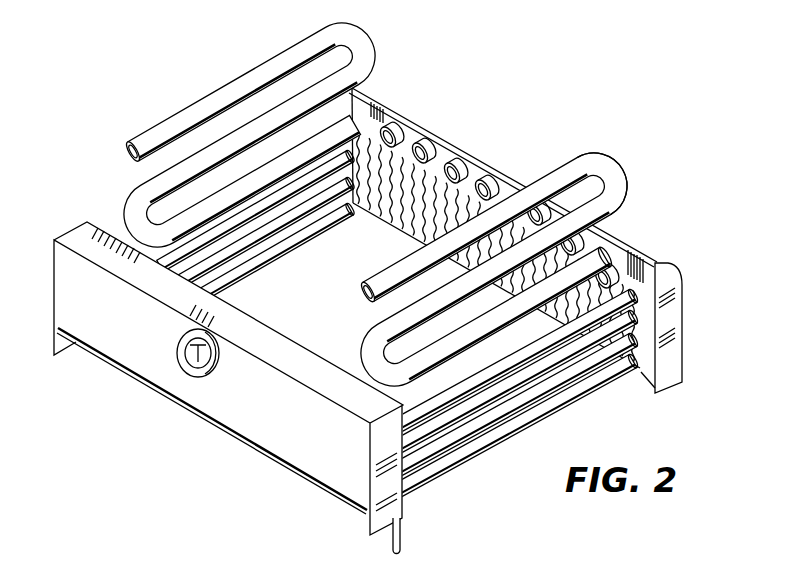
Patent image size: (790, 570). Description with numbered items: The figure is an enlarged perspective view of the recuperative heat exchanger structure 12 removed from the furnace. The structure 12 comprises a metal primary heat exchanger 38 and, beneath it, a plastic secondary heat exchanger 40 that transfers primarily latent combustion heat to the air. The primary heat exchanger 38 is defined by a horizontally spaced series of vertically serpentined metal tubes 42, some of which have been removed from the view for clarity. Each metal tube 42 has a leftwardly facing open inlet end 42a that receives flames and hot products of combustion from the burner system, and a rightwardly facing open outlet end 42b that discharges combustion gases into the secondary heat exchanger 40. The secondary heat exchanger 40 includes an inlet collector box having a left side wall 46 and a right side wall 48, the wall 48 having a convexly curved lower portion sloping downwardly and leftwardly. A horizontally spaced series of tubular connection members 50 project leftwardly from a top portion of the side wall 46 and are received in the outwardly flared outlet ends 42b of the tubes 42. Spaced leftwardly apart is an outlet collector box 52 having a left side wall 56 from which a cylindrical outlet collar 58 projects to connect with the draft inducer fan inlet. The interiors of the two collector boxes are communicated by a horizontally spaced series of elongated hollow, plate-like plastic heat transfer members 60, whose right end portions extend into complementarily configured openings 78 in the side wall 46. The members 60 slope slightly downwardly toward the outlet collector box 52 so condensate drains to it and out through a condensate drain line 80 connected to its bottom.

The recuperative heat exchanger structure 12 is at (541, 98).
The primary heat exchanger 38 is at (626, 165).
The secondary heat exchanger 40 is at (714, 308).
The metal tubes 42 is at (402, 204).
The open inlet end 42a is at (170, 116).
The open outlet end 42b is at (360, 87).
The left side wall 46 is at (655, 365).
The right side wall 48 is at (678, 324).
The tubular connection members 50 is at (460, 145).
The outlet collector box 52 is at (260, 362).
The left side wall 56 is at (143, 352).
The cylindrical outlet collar 58 is at (213, 370).
The heat transfer members 60 is at (250, 262).
The openings 78 is at (397, 222).
The condensate drain line 80 is at (403, 540).